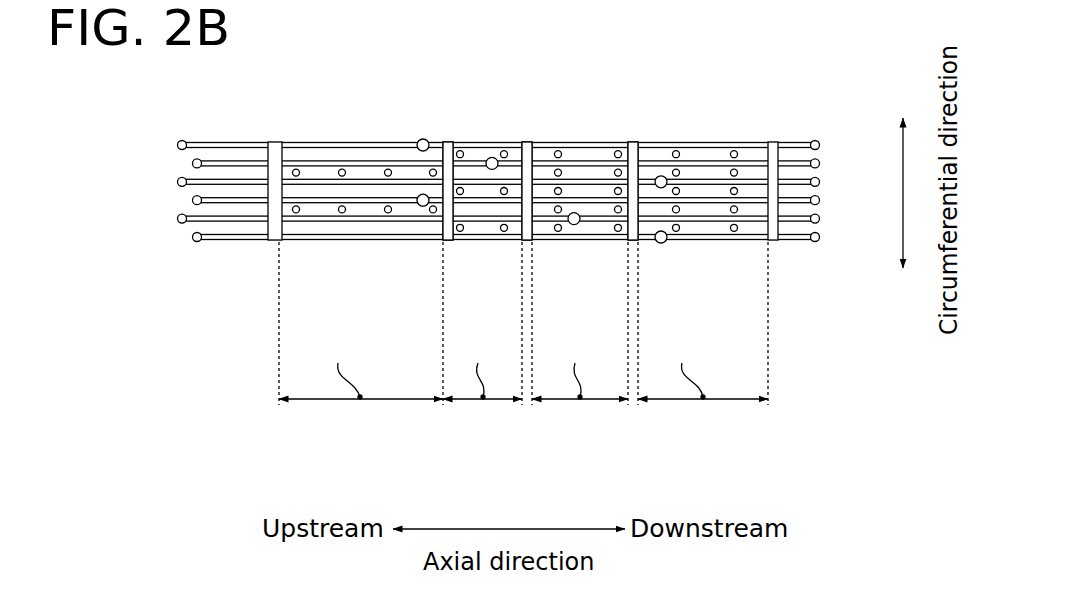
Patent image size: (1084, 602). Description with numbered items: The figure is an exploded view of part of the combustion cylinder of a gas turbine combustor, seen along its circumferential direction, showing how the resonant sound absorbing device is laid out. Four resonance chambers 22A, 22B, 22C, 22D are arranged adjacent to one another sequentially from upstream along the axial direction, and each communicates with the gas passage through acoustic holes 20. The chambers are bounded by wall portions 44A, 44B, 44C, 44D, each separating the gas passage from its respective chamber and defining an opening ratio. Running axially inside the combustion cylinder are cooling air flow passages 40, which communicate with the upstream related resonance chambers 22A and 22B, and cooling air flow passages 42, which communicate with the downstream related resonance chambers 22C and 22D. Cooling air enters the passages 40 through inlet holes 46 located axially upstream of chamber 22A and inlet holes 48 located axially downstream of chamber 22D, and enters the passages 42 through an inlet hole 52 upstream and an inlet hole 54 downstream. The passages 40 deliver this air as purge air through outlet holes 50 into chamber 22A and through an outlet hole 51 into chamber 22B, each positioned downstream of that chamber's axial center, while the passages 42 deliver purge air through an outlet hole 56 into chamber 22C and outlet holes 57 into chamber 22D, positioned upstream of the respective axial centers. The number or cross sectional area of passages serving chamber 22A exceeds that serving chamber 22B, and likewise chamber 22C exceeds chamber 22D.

The acoustic hole 20 is at (372, 208).
The upstream related resonance chamber 22A is at (361, 429).
The upstream related resonance chamber 22B is at (490, 429).
The downstream related resonance chamber 22C is at (582, 429).
The downstream related resonance chamber 22D is at (703, 429).
The cooling air flow passage 40 is at (297, 177).
The cooling air flow passage 42 is at (342, 177).
The wall portion 44A is at (353, 143).
The wall portion 44B is at (482, 148).
The wall portion 44C is at (580, 148).
The wall portion 44D is at (700, 148).
The inlet hole 46 is at (192, 162).
The inlet hole 48 is at (820, 163).
The outlet hole 50 is at (422, 206).
The outlet hole 51 is at (497, 158).
The inlet hole 52 is at (177, 182).
The inlet hole 54 is at (820, 182).
The outlet hole 56 is at (578, 225).
The outlet hole 57 is at (662, 188).